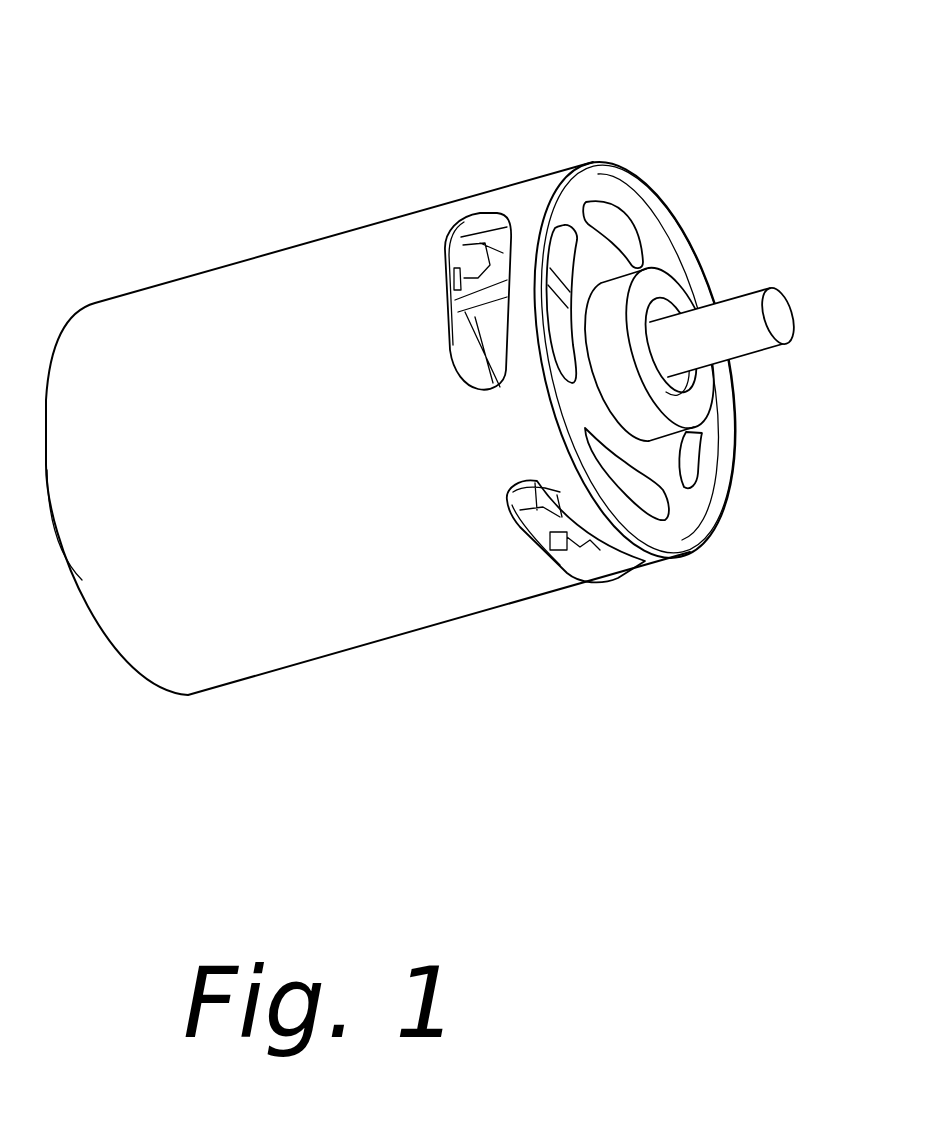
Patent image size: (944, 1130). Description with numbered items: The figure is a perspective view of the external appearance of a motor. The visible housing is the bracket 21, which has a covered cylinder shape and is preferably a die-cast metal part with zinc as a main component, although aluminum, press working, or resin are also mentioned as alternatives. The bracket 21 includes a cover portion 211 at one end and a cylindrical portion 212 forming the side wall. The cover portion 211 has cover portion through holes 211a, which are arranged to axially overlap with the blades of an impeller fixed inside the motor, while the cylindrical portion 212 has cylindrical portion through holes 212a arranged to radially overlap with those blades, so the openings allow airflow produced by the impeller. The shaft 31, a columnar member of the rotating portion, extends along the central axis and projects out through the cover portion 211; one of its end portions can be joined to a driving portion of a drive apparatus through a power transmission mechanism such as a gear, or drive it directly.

The bracket 21 is at (454, 355).
The cover portion 211 is at (665, 341).
The cover portion through holes 211a is at (636, 490).
The cylindrical portion 212 is at (422, 409).
The cylindrical portion through holes 212a is at (586, 558).
The shaft 31 is at (721, 320).